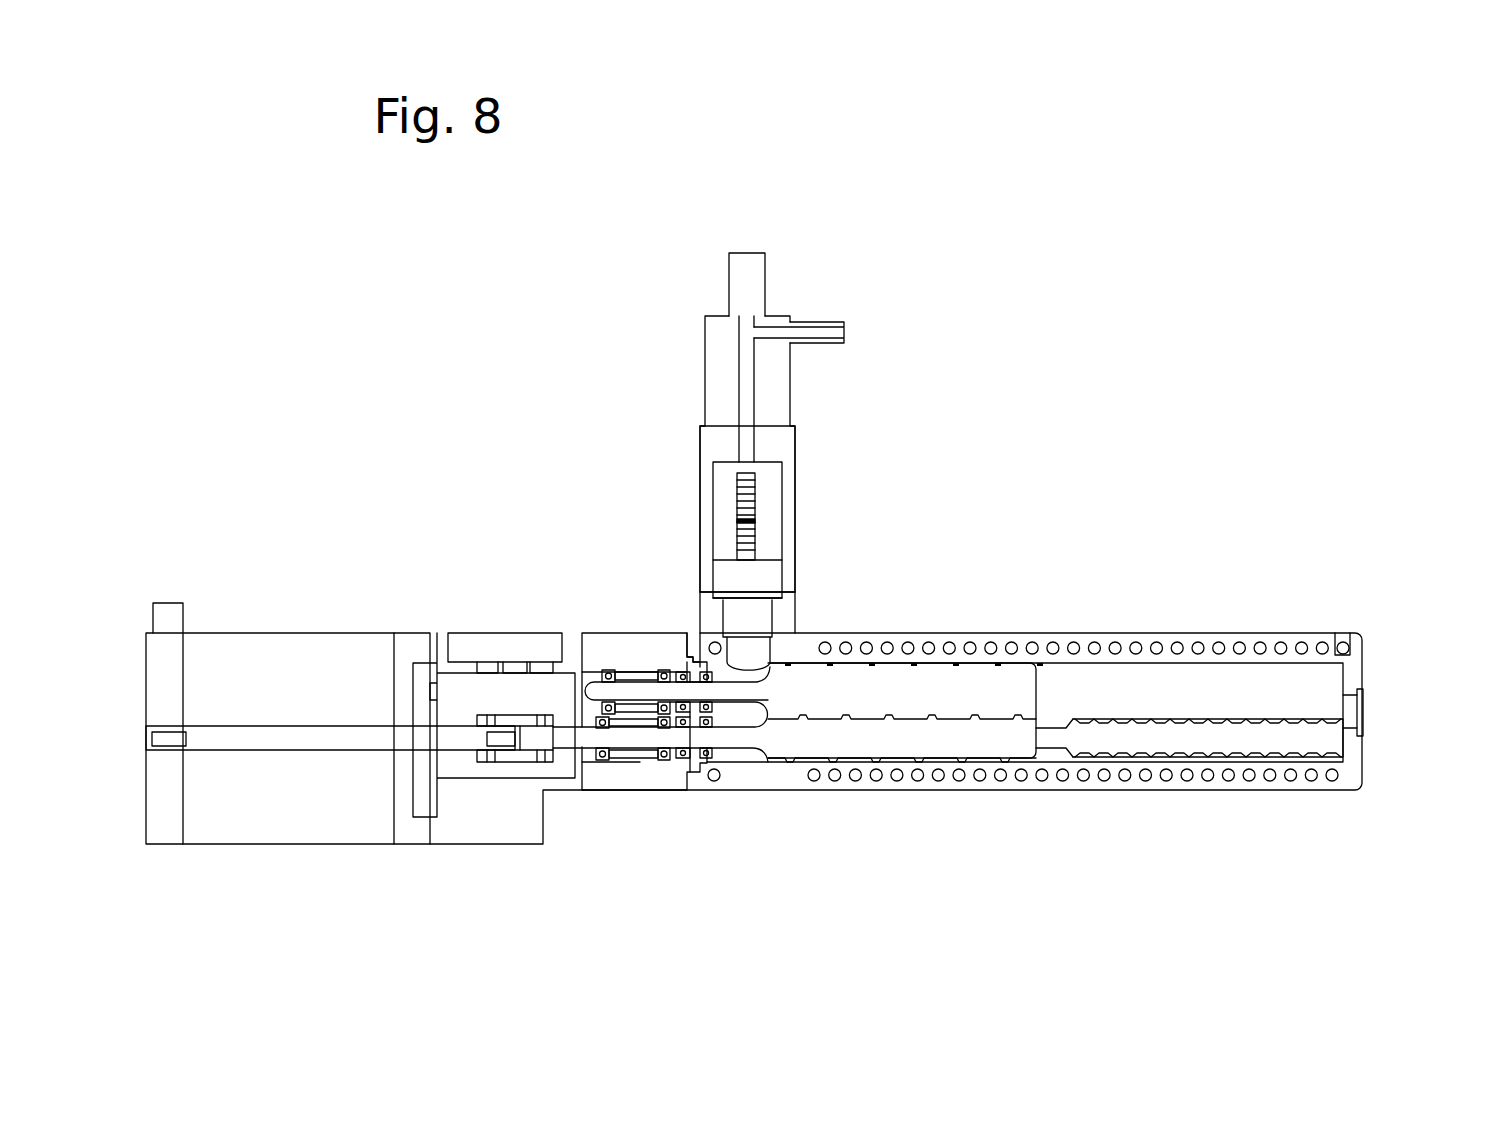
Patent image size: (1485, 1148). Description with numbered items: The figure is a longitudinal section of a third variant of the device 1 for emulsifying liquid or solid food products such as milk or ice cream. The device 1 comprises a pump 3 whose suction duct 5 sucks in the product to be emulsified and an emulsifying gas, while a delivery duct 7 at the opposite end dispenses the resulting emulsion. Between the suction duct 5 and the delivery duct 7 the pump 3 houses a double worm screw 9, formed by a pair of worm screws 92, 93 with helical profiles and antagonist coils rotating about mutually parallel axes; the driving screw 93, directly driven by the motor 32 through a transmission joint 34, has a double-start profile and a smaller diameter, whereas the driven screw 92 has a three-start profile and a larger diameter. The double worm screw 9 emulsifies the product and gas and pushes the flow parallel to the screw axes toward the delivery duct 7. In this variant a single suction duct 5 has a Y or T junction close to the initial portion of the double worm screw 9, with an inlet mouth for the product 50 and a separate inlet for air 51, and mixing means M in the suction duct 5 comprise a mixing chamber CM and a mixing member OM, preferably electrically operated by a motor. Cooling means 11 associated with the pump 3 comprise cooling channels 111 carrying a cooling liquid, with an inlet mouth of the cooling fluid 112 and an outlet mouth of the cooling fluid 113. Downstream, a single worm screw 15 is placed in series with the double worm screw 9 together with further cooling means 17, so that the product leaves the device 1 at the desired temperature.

The device for emulsifying liquid or solid products 1 is at (418, 428).
The pump 3 is at (681, 613).
The suction duct 5 is at (700, 265).
The delivery duct 7 is at (1367, 716).
The double worm screw 9 is at (900, 766).
The cooling means 11 is at (1040, 648).
The single worm screw 15 is at (1219, 762).
The further cooling means 17 is at (1167, 640).
The motor 32 is at (282, 633).
The transmission joint 34 is at (500, 633).
The inlet mouth for the product 50 is at (748, 252).
The inlet for air 51 is at (848, 332).
The driven screw 92 is at (936, 665).
The driving screw 93 is at (958, 736).
The cooling channels 111 is at (970, 642).
The inlet mouth of the cooling fluid 112 is at (1343, 641).
The outlet mouth of the cooling fluid 113 is at (714, 781).
The mixing means M is at (782, 503).
The mixing member OM is at (752, 530).
The mixing chamber CM is at (772, 568).